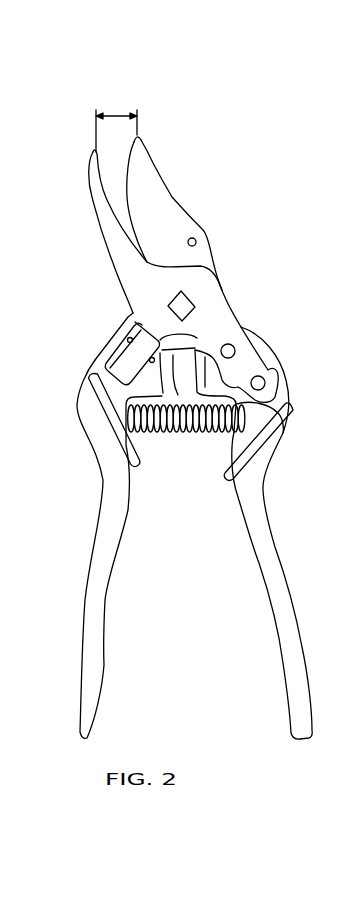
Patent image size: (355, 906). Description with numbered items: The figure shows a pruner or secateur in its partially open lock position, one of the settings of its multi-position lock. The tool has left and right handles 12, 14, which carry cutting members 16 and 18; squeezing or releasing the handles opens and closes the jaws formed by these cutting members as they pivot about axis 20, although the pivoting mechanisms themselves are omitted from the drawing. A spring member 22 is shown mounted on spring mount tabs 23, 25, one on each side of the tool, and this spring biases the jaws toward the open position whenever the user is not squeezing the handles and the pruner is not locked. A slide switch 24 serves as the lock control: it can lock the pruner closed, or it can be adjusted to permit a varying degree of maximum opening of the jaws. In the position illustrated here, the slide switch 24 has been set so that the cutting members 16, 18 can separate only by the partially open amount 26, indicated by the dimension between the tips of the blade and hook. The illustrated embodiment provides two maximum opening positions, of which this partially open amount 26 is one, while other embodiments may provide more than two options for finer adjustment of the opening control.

The left handle 12 is at (92, 663).
The right handle 14 is at (282, 588).
The cutting member 16 is at (157, 203).
The cutting member 18 is at (110, 227).
The axis 20 is at (182, 302).
The spring member 22 is at (187, 433).
The spring mount tab 23 is at (126, 413).
The slide switch 24 is at (127, 347).
The spring mount tab 25 is at (238, 413).
The partially open amount 26 is at (136, 112).